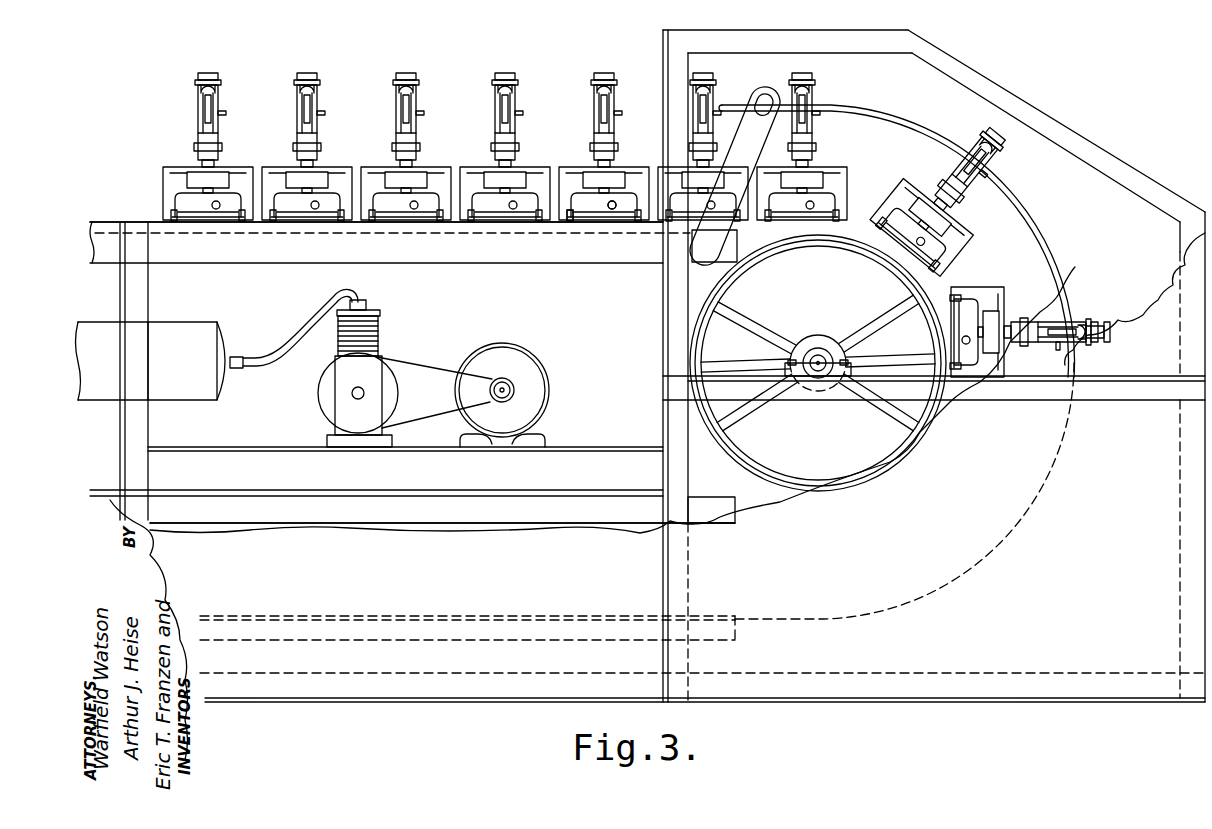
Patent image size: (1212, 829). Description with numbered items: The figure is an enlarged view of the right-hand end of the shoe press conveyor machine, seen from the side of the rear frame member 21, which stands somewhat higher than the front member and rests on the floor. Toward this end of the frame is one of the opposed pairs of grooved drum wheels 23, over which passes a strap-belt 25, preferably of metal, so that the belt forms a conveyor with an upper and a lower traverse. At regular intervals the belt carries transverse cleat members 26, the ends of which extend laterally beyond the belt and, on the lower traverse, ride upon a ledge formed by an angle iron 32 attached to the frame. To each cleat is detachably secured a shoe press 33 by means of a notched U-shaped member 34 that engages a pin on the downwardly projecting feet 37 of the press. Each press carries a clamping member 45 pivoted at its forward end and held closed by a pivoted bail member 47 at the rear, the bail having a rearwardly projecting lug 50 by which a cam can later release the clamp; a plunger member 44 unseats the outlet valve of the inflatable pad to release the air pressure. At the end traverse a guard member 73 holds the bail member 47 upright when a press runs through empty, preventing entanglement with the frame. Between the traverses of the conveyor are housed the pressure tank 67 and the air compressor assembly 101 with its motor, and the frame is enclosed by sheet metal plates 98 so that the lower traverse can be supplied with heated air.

The rear frame member 21 is at (512, 257).
The drum wheels 23 is at (704, 338).
The strap-belt 25 is at (866, 192).
The cleat members 26 is at (980, 298).
The angle iron 32 is at (586, 512).
The shoe press 33 is at (175, 182).
The notched U-shaped member 34 is at (580, 222).
The feet 37 is at (170, 210).
The plunger member 44 is at (613, 210).
The clamping member 45 is at (198, 99).
The bail member 47 is at (205, 122).
The rearwardly projecting lug 50 is at (198, 146).
The pressure tank 67 is at (160, 361).
The guard members 73 is at (1035, 213).
The sheet metal plates 98 is at (1158, 285).
The air compressor assembly 101 is at (446, 348).